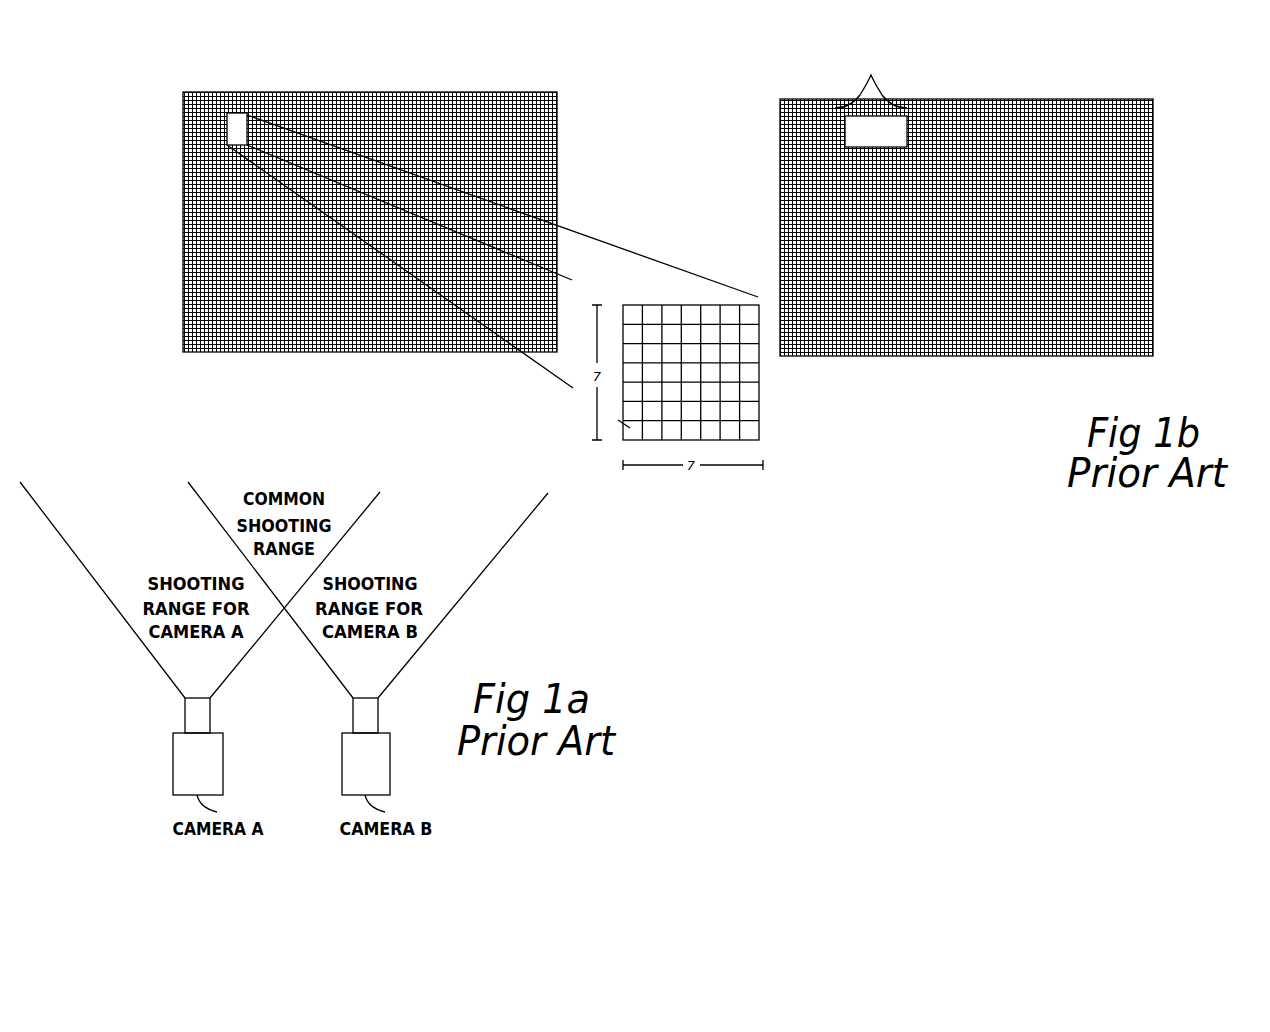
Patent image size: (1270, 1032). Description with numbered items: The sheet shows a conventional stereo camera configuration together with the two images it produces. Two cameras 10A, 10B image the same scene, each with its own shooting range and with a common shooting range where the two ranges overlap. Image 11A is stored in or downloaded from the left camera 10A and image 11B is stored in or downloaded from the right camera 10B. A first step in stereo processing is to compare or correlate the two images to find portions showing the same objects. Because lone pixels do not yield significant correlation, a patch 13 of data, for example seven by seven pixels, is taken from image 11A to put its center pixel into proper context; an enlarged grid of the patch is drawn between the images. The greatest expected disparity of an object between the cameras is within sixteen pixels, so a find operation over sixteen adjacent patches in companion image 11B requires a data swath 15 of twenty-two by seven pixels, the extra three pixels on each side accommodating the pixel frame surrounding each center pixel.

In FIG. 1A, the camera 10A is at (200, 676).
In FIG. 1A, the camera 10B is at (368, 676).
In FIG. 1B, the image 11A is at (180, 243).
In FIG. 1B, the image 11B is at (981, 364).
In FIG. 1B, the patch 13 is at (226, 118).
In FIG. 1B, the data swath 15 is at (879, 67).